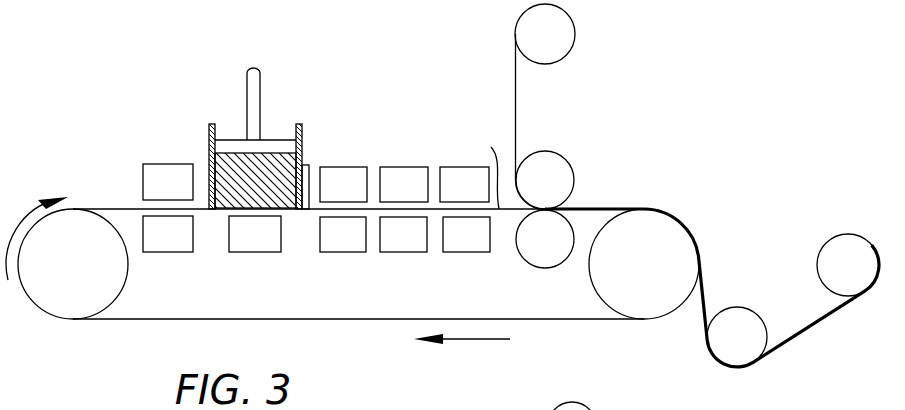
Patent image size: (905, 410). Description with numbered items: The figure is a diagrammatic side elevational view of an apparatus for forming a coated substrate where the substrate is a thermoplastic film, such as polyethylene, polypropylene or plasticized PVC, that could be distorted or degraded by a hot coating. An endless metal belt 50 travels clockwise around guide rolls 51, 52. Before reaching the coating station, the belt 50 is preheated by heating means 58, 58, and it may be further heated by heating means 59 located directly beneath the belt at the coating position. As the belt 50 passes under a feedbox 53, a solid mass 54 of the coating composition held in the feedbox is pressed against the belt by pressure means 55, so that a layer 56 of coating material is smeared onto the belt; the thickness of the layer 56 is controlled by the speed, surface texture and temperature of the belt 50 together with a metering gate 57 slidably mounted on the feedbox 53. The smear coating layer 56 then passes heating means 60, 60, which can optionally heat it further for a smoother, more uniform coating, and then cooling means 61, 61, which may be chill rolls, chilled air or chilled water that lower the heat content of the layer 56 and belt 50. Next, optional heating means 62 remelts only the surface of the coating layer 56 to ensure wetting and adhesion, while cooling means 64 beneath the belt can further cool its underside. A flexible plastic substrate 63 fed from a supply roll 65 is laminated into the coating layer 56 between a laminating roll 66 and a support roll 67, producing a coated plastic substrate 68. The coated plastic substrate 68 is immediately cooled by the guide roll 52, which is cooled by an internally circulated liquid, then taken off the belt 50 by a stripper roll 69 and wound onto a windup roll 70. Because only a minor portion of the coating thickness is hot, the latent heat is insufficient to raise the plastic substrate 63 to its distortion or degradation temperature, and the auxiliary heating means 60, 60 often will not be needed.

The endless metal belt 50 is at (312, 319).
The guide roll 51 is at (73, 264).
The guide roll 52 is at (644, 264).
The feedbox 53 is at (302, 146).
The solid mass of coating composition 54 is at (272, 162).
The pressure means 55 is at (262, 88).
The layer of coating material 56 is at (487, 167).
The metering gate 57 is at (310, 178).
The heating means 58 is at (168, 208).
The heating means 59 is at (255, 234).
The heating means 60 is at (343, 209).
The cooling means 61 is at (404, 209).
The heating means 62 is at (464, 184).
The plastic substrate 63 is at (515, 125).
The cooling means 64 is at (466, 234).
The supply roll 65 is at (545, 34).
The laminating roll 66 is at (545, 180).
The support roll 67 is at (545, 239).
The coated plastic substrate 68 is at (595, 209).
The stripper roll 69 is at (737, 337).
The windup roll 70 is at (848, 265).